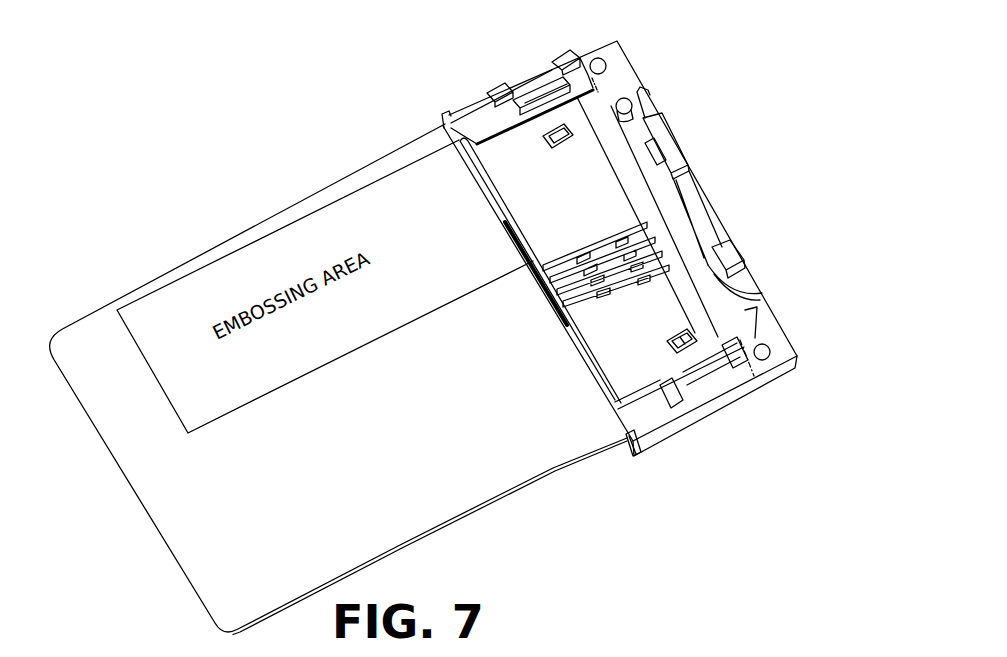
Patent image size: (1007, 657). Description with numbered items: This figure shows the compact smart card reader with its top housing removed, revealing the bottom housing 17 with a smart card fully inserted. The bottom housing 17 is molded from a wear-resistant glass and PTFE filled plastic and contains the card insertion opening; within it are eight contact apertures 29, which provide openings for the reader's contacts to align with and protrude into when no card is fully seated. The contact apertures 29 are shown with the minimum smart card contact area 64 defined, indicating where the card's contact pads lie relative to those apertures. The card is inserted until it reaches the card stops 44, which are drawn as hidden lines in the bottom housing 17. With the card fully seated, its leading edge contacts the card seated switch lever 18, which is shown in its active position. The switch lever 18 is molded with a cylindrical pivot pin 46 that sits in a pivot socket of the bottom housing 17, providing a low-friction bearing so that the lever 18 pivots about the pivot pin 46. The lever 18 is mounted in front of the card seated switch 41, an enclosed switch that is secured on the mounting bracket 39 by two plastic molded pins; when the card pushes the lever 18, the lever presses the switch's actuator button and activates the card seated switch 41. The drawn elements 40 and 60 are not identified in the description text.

The bottom housing 17 is at (470, 103).
The contact apertures 29 is at (610, 240).
The card stops 44 is at (586, 70).
The pivot pin 46 is at (625, 98).
The mounting bracket 39 is at (660, 128).
The card seated switch 41 is at (667, 155).
The card seated switch lever 18 is at (695, 240).
The stop block 40 is at (723, 293).
The spring arm 60 is at (762, 293).
The minimum smart card contact area 64 is at (572, 318).